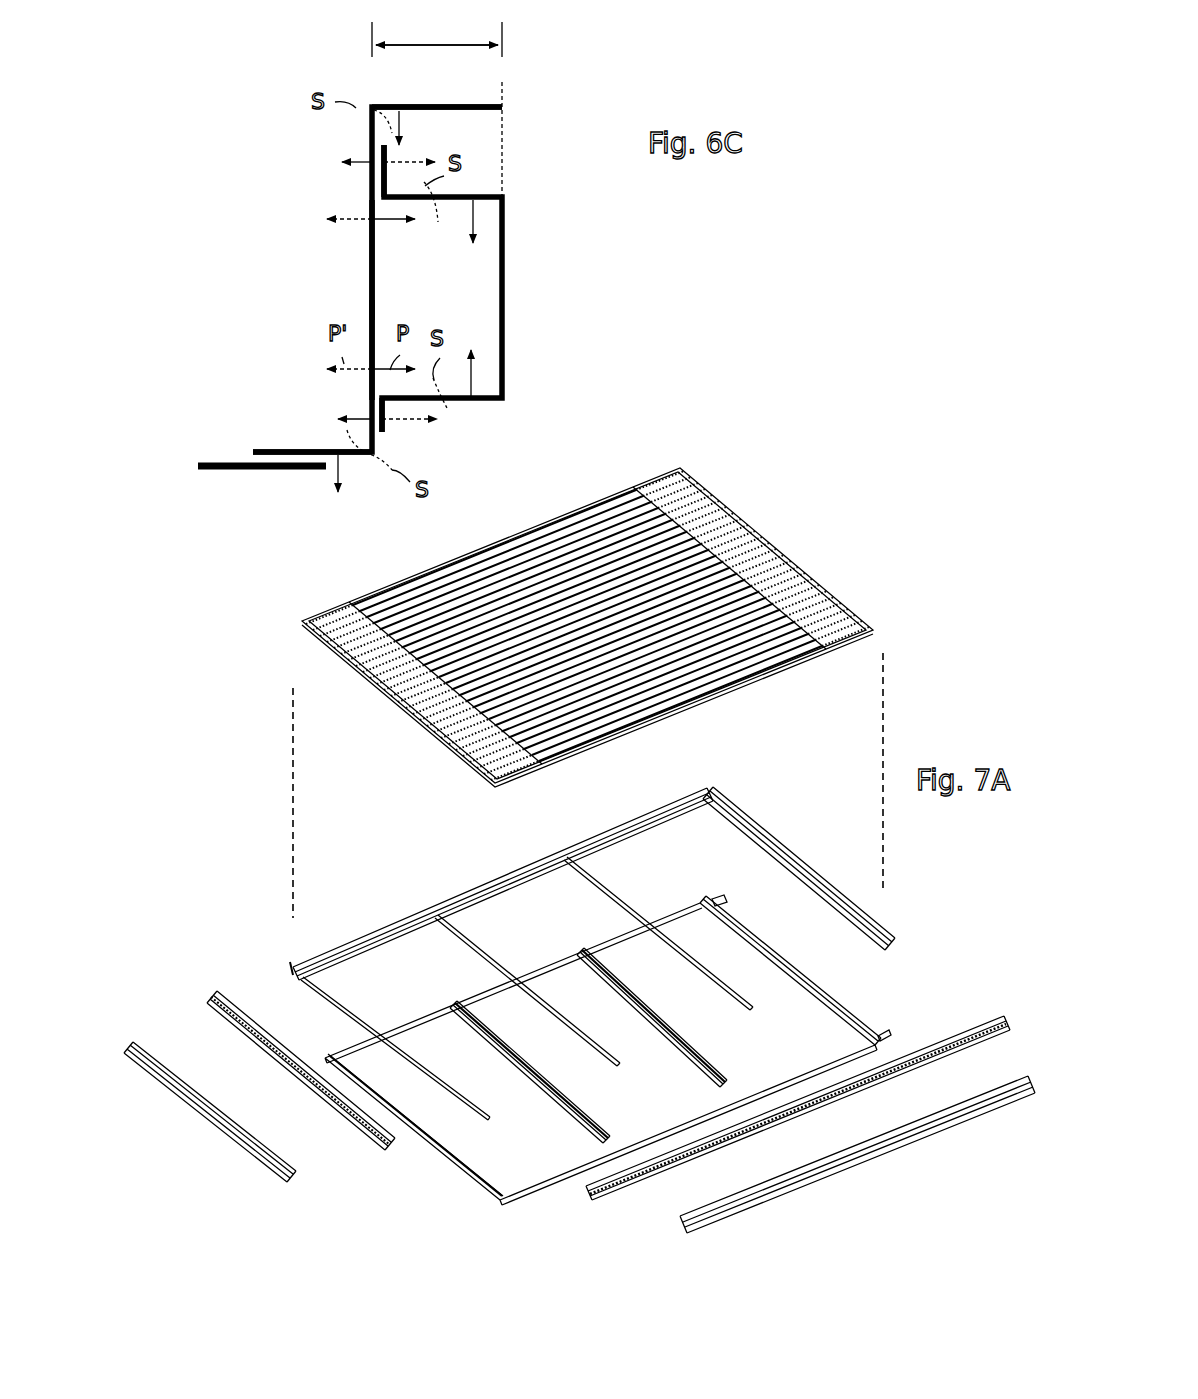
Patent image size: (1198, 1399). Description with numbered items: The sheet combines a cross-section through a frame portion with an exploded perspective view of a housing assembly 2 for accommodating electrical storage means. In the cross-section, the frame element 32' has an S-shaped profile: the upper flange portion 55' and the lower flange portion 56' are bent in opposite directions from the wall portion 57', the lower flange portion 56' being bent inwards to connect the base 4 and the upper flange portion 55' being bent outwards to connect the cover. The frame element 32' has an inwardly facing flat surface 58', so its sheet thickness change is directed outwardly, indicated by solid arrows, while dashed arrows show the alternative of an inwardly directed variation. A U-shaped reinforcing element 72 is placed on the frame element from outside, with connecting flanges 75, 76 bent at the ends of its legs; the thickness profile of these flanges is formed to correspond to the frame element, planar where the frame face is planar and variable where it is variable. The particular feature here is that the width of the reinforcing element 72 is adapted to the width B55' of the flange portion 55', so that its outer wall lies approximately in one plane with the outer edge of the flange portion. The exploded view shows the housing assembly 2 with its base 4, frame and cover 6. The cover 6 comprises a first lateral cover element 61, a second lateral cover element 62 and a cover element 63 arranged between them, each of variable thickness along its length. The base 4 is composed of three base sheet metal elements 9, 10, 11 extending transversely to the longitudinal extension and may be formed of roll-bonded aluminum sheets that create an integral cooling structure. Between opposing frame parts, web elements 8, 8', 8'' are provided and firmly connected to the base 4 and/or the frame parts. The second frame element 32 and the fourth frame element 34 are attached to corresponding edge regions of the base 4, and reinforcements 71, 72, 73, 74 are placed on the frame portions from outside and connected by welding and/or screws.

In FIG. 7A, the housing assembly 2 is at (852, 485).
In FIG. 6C, the base 4 is at (228, 470).
In FIG. 7A, the base 4 is at (852, 1004).
In FIG. 7A, the cover 6 is at (586, 490).
In FIG. 7A, the web element 8 is at (395, 1048).
In FIG. 7A, the web element 8' is at (527, 990).
In FIG. 7A, the cross brace 8'' is at (658, 933).
In FIG. 7A, the base sheet metal element 9 is at (526, 1166).
In FIG. 7A, the base sheet metal element 10 is at (566, 975).
In FIG. 7A, the base sheet metal element 11 is at (786, 980).
In FIG. 7A, the second frame element 32 is at (798, 1127).
In FIG. 6C, the frame element 32' is at (371, 279).
In FIG. 7A, the fourth frame element 34 is at (372, 1150).
In FIG. 6C, the upper flange portion 55' is at (437, 84).
In FIG. 6C, the lower flange portion 56' is at (310, 417).
In FIG. 6C, the wall portion 57' is at (336, 346).
In FIG. 6C, the inwardly facing flat surface 58' is at (331, 260).
In FIG. 7A, the first lateral cover element 61 is at (346, 632).
In FIG. 7A, the second lateral cover element 62 is at (735, 520).
In FIG. 7A, the cover element 63 is at (491, 560).
In FIG. 7A, the reinforcement 71 is at (291, 964).
In FIG. 6C, the reinforcing element 72 is at (509, 238).
In FIG. 7A, the reinforcing element 72 is at (893, 1165).
In FIG. 7A, the reinforcement 73 is at (900, 950).
In FIG. 7A, the reinforcement 74 is at (252, 1165).
In FIG. 6C, the connecting flange 75 is at (386, 181).
In FIG. 6C, the connecting flange 76 is at (386, 428).
In FIG. 6C, the width of the flange portion B55' is at (437, 109).